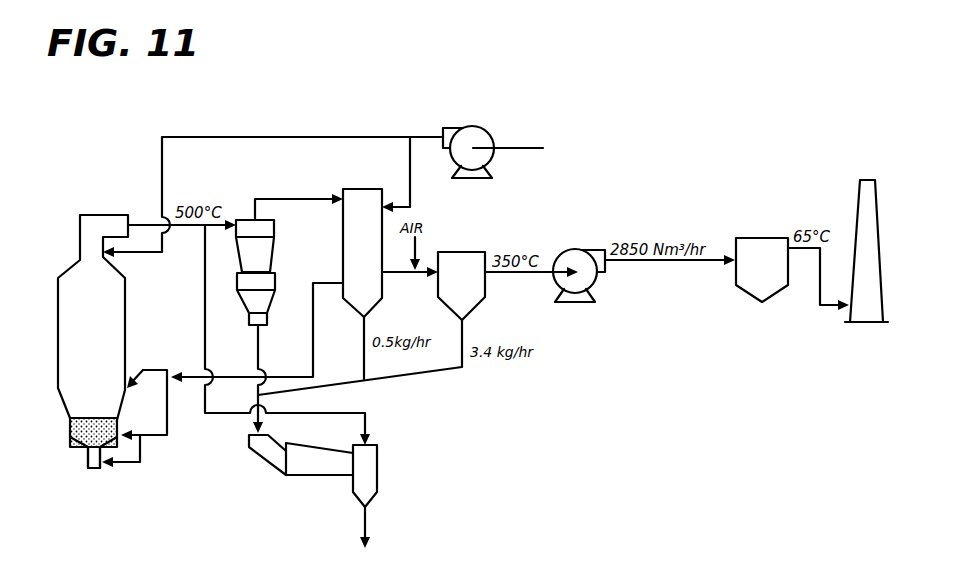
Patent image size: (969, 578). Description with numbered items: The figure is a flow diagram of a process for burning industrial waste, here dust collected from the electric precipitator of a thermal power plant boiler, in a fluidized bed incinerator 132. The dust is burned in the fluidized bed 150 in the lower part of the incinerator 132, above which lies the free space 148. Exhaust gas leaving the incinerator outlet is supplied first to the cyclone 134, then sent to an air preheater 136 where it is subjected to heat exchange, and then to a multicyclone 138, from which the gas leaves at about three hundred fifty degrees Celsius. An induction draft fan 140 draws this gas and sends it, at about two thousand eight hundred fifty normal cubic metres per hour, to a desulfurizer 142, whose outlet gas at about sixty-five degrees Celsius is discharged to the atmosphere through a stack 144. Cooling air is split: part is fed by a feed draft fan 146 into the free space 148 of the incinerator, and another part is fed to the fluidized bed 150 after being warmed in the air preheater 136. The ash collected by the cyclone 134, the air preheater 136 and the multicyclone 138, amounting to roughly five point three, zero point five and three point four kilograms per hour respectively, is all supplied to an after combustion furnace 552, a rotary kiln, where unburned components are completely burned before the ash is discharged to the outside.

The fluidized bed reactor 132 is at (126, 288).
The cyclone 134 is at (274, 250).
The air preheater 136 is at (382, 287).
The multicyclone 138 is at (460, 247).
The induction draft fan 140 is at (593, 283).
The desulfurizer 142 is at (770, 237).
The stack 144 is at (855, 207).
The feed draft fan 146 is at (493, 139).
The free space 148 is at (112, 342).
The fluidized bed 150 is at (74, 450).
The ash cooler conveyor 552 is at (310, 480).